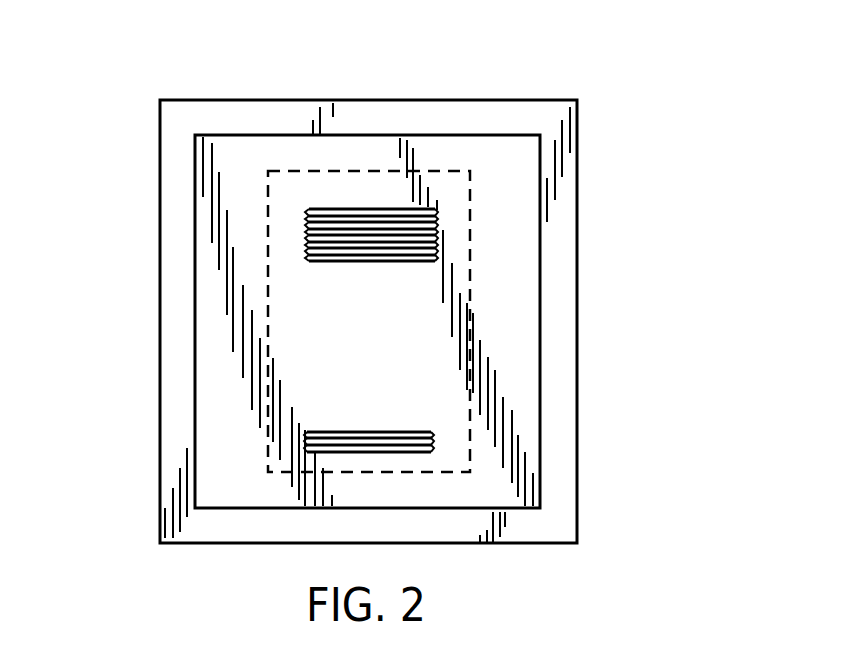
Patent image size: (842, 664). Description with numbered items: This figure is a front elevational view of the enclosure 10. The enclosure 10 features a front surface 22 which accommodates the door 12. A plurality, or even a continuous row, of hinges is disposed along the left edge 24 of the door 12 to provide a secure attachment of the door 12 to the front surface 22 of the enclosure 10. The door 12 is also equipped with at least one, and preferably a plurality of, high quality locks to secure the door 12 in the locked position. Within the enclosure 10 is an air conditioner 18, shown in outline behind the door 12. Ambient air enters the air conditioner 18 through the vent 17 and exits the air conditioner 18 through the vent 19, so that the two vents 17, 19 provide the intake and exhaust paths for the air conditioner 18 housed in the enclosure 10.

The enclosure 10 is at (594, 84).
The door 12 is at (289, 133).
The vent 17 is at (437, 215).
The air conditioner 18 is at (469, 288).
The vent 19 is at (415, 432).
The front surface 22 is at (392, 115).
The left edge 24 is at (195, 316).